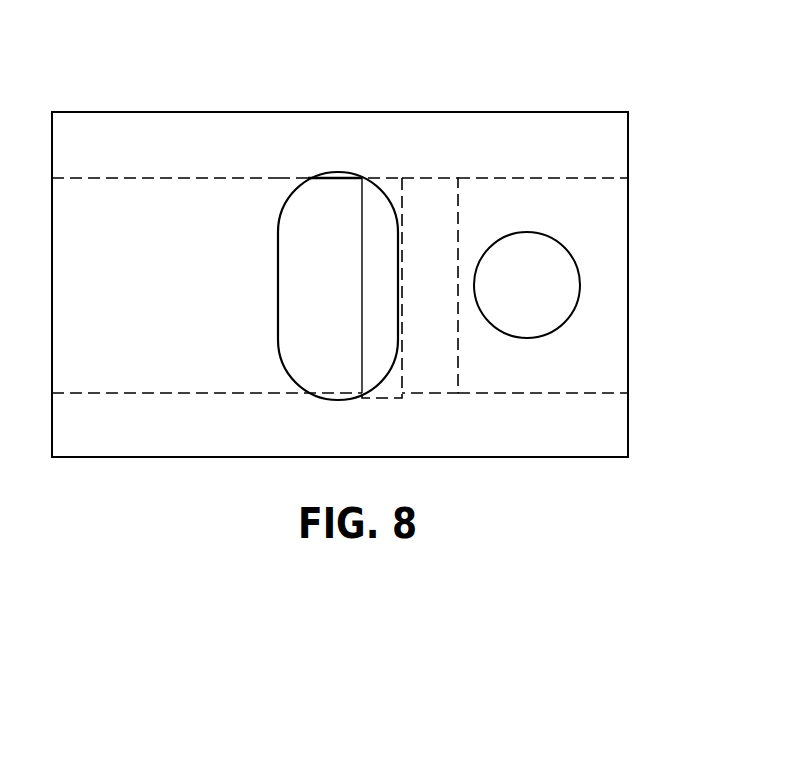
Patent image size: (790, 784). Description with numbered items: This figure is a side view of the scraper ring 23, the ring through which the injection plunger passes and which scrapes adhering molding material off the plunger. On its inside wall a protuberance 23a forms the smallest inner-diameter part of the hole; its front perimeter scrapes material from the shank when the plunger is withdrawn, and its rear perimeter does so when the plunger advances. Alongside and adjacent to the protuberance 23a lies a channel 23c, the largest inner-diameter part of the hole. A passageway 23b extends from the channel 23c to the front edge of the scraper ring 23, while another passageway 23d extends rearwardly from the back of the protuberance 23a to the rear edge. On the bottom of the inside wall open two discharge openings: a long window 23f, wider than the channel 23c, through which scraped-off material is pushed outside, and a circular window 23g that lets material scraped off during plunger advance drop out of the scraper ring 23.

The scraper ring 23 is at (595, 64).
The protuberance 23a is at (438, 177).
The passageway 23b is at (194, 179).
The channel 23c is at (386, 178).
The passageway 23d is at (596, 180).
The long window 23f is at (318, 178).
The circular window 23g is at (565, 303).